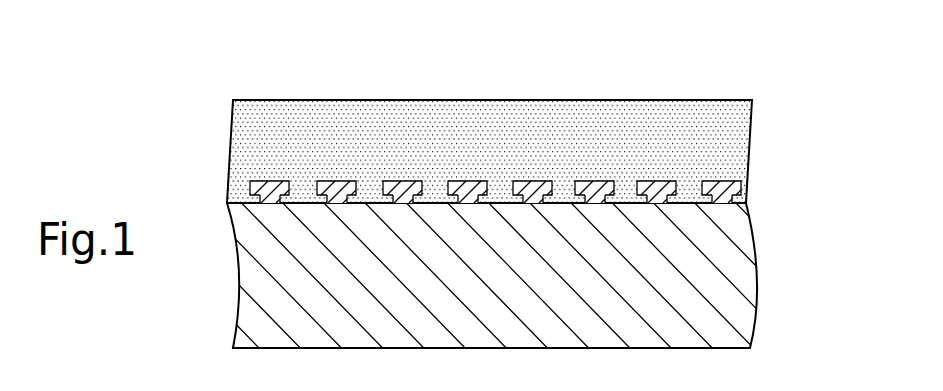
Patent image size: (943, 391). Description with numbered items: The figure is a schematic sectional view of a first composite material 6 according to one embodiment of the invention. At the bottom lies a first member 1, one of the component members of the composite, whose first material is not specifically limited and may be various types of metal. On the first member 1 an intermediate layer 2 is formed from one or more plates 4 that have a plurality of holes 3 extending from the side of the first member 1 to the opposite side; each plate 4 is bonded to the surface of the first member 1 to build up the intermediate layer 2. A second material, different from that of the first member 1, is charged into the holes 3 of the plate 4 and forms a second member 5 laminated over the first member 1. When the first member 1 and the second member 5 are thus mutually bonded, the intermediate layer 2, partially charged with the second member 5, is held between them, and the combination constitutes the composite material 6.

The first member 1 is at (730, 276).
The intermediate layer 2 is at (557, 166).
The holes 3 is at (685, 183).
The plate 4 is at (737, 184).
The second member 5 is at (620, 130).
The composite material 6 is at (779, 97).